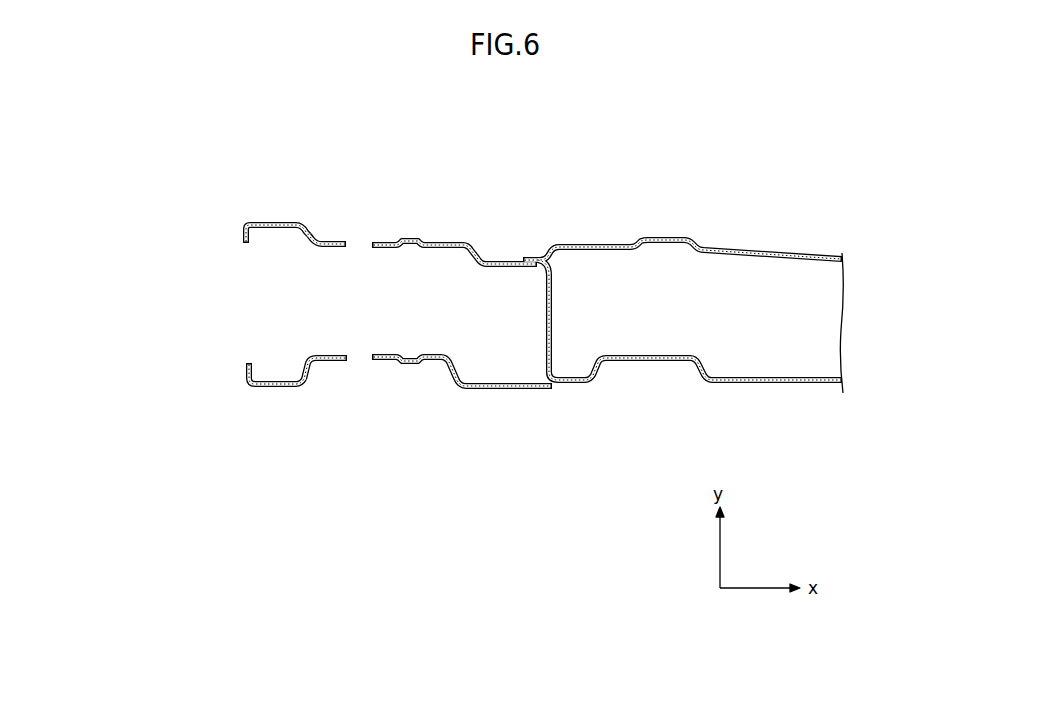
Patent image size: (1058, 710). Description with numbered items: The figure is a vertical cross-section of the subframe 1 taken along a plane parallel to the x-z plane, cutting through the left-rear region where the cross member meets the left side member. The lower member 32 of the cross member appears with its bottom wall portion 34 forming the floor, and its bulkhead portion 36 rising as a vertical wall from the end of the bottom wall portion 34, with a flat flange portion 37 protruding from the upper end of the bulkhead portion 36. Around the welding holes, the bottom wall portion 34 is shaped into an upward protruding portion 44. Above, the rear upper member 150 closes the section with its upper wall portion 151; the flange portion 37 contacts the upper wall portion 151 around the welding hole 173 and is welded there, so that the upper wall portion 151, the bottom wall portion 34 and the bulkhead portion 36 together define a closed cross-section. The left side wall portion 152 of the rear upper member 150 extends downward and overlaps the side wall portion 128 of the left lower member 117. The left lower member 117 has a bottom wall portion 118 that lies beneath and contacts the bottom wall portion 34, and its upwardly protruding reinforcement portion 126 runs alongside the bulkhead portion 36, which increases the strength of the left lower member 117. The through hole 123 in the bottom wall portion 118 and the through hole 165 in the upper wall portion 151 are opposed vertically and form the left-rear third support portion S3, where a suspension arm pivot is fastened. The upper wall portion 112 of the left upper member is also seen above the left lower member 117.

The subframe 1 is at (776, 165).
The rear upper member 150 is at (750, 238).
The upper wall portion 151 is at (615, 245).
The bulkhead portion 36 is at (552, 308).
The flange portion 37 is at (500, 268).
The lower member 32 is at (633, 378).
The protruding portion 44 is at (678, 362).
The bottom wall portion 34 is at (770, 385).
The upper wall portion 112 is at (275, 221).
The left side wall portion 152 is at (243, 237).
The through hole 165 is at (347, 243).
The welding hole 173 is at (494, 261).
The side wall portion 128 is at (245, 372).
The left lower member 117 is at (266, 390).
The through hole 123 is at (350, 362).
The reinforcement portion 126 is at (436, 362).
The bottom wall portion 118 is at (470, 388).
The third support portion S3 is at (236, 303).